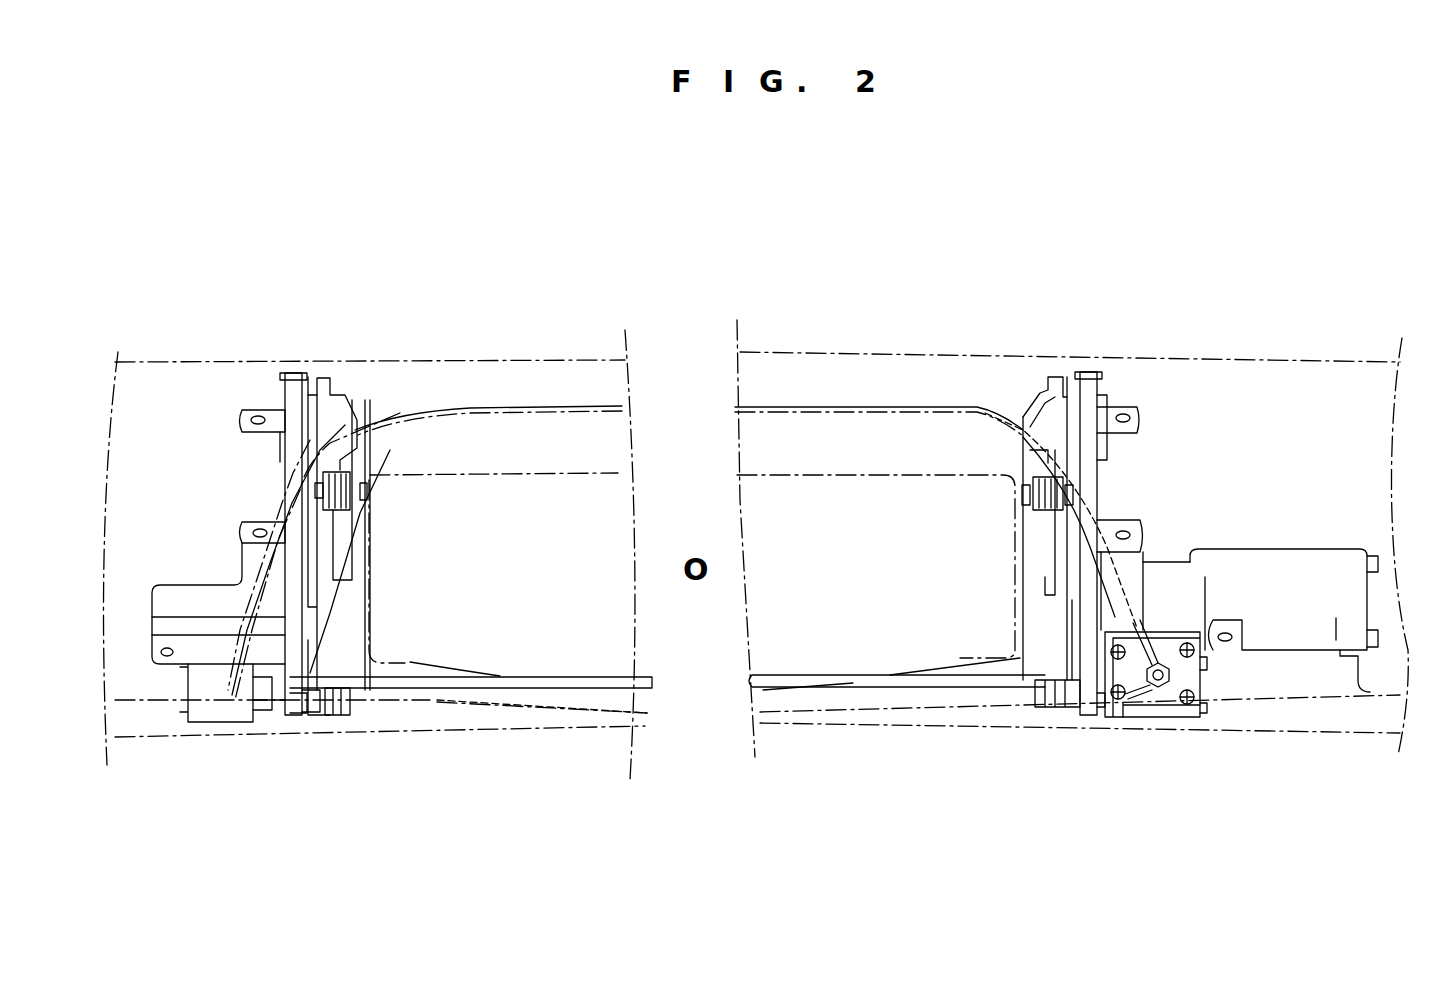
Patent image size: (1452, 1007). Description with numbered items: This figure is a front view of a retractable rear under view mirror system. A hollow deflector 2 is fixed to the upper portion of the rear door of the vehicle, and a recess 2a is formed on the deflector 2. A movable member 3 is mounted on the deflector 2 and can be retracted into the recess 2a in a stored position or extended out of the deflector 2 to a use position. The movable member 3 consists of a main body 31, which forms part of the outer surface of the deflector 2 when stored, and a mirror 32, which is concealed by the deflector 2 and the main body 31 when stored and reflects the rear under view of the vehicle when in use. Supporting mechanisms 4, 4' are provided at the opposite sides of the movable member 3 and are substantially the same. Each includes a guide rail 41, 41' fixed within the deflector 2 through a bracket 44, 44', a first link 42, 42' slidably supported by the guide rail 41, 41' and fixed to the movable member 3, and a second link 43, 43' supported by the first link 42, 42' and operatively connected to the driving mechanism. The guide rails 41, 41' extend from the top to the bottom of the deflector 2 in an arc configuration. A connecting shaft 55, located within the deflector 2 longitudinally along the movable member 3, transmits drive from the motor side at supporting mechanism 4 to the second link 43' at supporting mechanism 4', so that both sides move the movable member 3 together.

The deflector 2 is at (1258, 355).
The recess 2a is at (775, 420).
The movable member 3 is at (519, 405).
The main body 31 is at (862, 433).
The mirror 32 is at (847, 643).
The supporting mechanism 4 is at (1200, 547).
The supporting mechanism 4' is at (262, 548).
The guide rail 41 is at (1135, 510).
The guide rail 41' is at (290, 506).
The first link 42 is at (1039, 487).
The first link 42' is at (357, 507).
The second link 43 is at (1121, 708).
The second link 43' is at (332, 732).
The bracket 44 is at (1237, 538).
The bracket 44' is at (229, 558).
The connecting shaft 55 is at (630, 683).